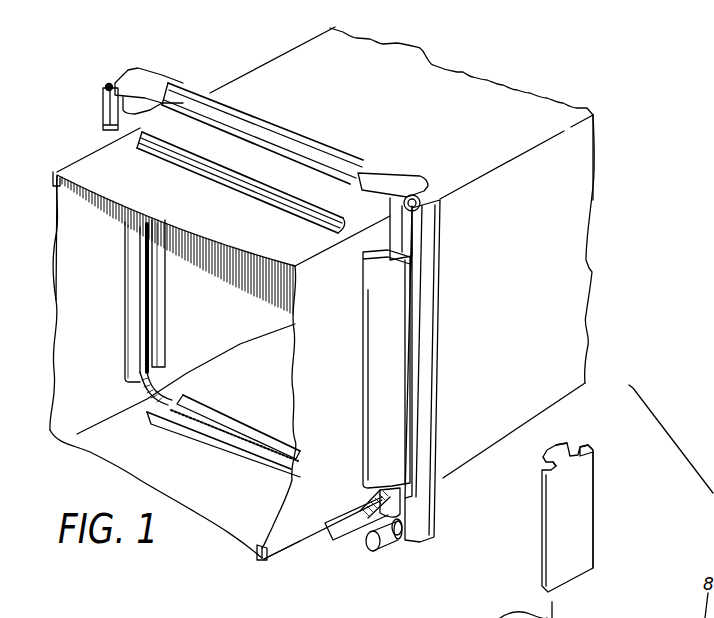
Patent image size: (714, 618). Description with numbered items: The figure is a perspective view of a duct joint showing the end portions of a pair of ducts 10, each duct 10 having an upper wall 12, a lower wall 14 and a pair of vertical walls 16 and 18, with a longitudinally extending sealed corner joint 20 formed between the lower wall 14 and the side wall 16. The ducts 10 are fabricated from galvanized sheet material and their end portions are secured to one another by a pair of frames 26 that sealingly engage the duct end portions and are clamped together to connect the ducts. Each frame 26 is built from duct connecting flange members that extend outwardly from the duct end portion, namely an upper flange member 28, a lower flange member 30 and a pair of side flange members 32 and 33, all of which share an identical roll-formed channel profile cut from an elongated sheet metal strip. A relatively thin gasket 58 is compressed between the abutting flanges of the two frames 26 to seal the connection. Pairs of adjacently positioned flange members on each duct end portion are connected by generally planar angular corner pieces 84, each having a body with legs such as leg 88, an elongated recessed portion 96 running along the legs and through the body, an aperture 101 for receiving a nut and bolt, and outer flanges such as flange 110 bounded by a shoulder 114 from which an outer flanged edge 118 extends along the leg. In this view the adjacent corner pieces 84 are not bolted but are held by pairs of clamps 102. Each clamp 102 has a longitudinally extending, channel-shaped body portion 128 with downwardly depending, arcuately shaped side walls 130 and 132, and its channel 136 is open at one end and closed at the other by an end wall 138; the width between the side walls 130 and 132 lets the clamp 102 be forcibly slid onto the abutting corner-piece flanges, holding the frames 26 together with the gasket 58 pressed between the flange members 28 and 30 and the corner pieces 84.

The duct 10 is at (214, 54).
The upper wall 12 is at (351, 74).
The lower wall 14 is at (256, 371).
The vertical wall 16 is at (85, 319).
The vertical wall 18 is at (552, 284).
The sealed corner joint 20 is at (204, 364).
The frame 26 is at (329, 107).
The upper flange member 28 is at (234, 103).
The lower flange member 30 is at (242, 423).
The side flange member 32 is at (128, 243).
The side flange member 33 is at (437, 333).
The gasket 58 is at (143, 402).
The angular corner piece 84 is at (110, 82).
The aperture 101 is at (118, 96).
The clamp 102 is at (152, 74).
The clamp body portion 128 is at (586, 529).
The side wall 130 is at (545, 468).
The side wall 132 is at (589, 446).
The channel 136 is at (552, 470).
The end wall 138 is at (560, 446).
The recessed portion 96 is at (448, 610).
The outer flanged edge 118 is at (568, 617).
The leg 88 is at (597, 617).
The shoulder 114 is at (629, 617).
The flange 110 is at (664, 617).